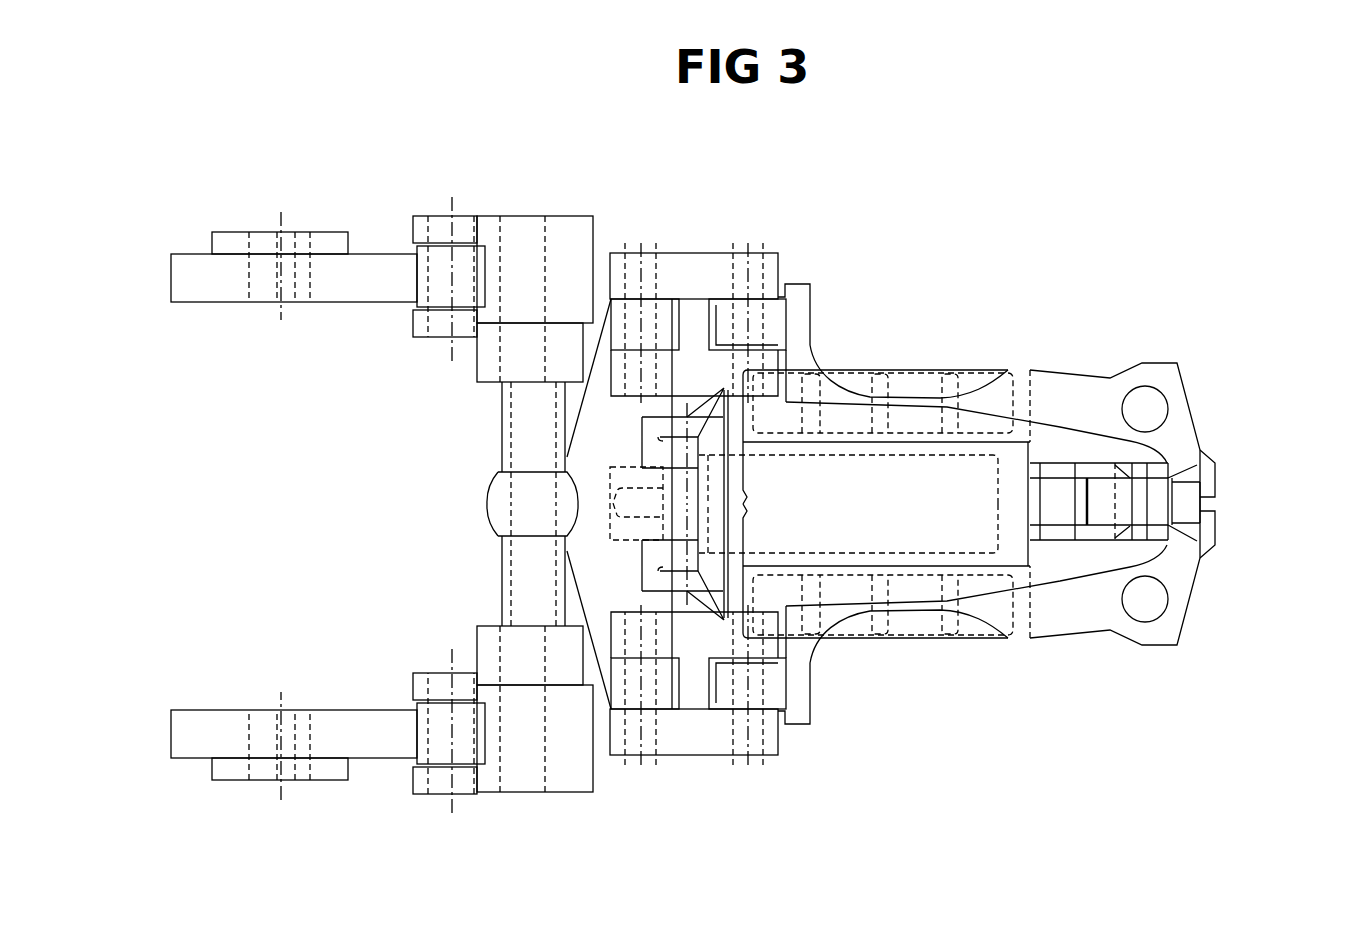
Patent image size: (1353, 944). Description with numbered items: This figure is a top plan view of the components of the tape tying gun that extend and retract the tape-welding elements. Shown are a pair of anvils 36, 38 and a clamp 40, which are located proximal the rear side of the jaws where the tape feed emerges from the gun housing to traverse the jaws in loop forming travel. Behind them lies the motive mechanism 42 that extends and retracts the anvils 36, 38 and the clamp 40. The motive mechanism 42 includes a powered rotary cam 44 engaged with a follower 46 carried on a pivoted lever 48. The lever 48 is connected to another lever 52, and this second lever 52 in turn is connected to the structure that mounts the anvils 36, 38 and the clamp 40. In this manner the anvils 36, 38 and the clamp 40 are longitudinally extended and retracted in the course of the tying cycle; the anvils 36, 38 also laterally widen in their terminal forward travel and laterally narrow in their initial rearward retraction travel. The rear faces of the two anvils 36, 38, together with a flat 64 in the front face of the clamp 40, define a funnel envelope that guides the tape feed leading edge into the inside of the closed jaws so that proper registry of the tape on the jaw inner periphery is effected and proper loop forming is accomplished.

The anvil 36 is at (1200, 463).
The anvil 38 is at (1187, 517).
The clamp 40 is at (1203, 530).
The motive mechanism 42 is at (807, 248).
The powered rotary cam 44 is at (332, 290).
The follower 46 is at (460, 272).
The lever 48 is at (588, 751).
The lever 52 is at (695, 745).
The flat 64 is at (1188, 502).